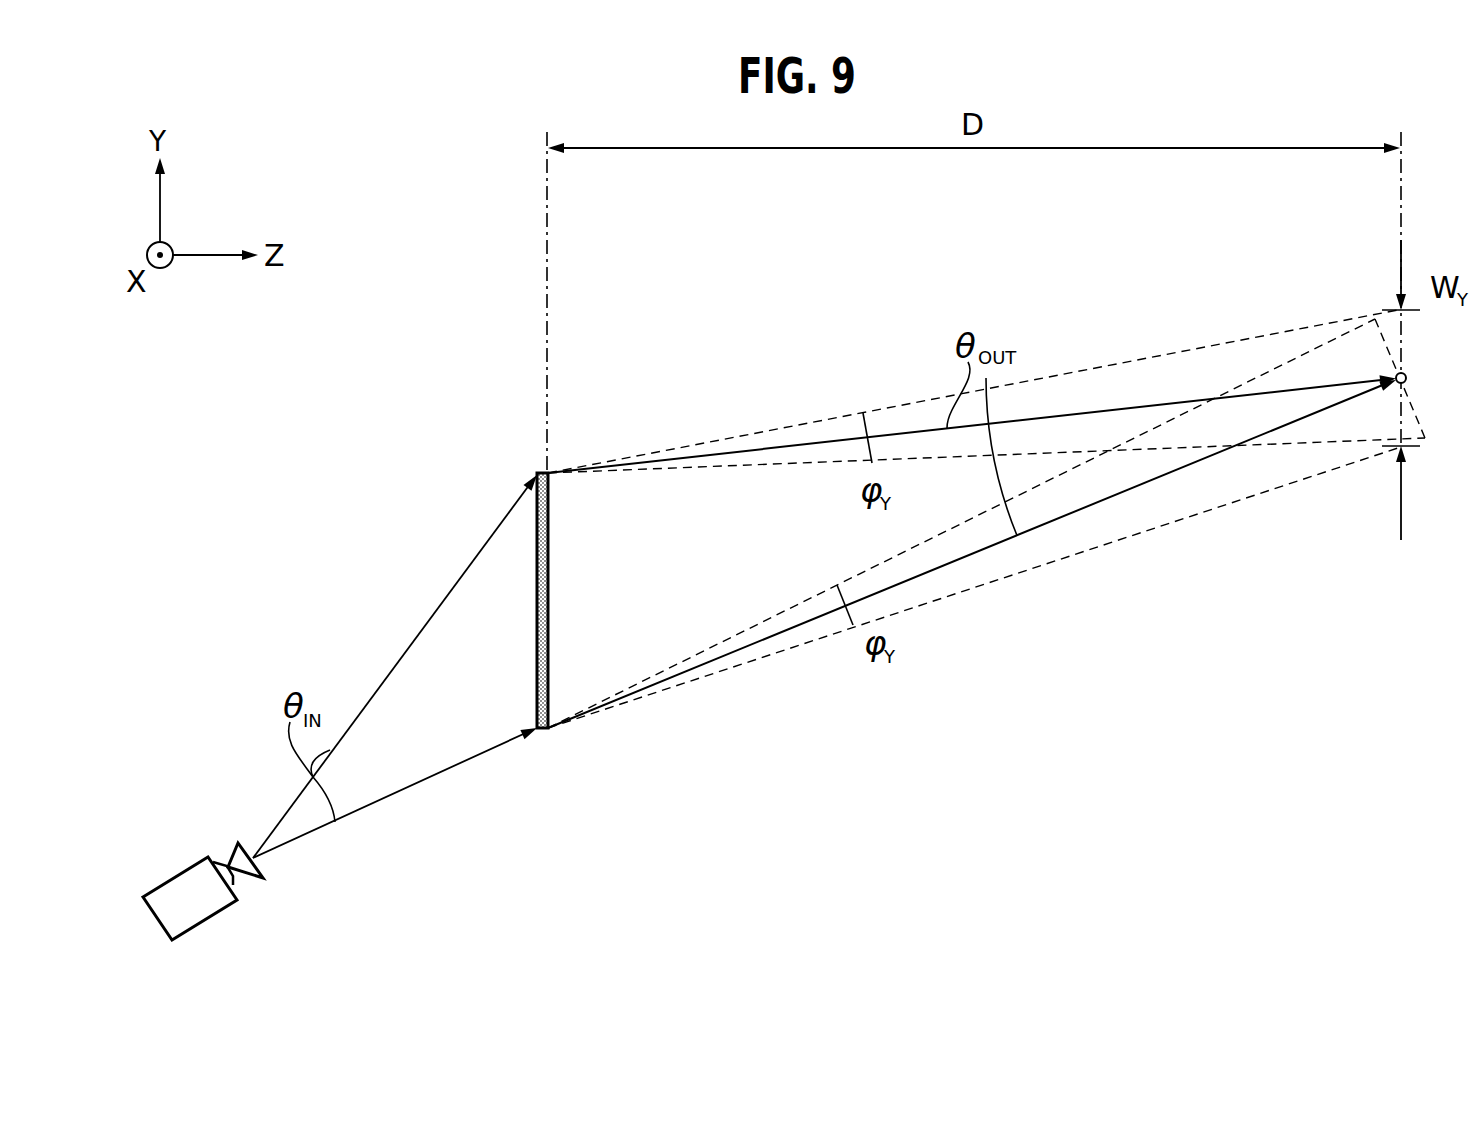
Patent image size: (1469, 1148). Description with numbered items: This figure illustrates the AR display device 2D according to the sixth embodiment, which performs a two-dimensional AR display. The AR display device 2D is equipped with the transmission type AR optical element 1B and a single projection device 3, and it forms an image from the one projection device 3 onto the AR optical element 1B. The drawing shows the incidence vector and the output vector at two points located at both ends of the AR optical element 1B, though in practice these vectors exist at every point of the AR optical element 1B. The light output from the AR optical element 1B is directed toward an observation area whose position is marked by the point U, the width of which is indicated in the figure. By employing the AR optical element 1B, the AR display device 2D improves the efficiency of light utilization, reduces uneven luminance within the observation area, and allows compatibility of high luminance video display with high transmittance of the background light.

The projection device 3 is at (152, 918).
The AR optical element 1B is at (537, 602).
The AR display device 2D is at (500, 425).
The user viewpoint U is at (1408, 378).